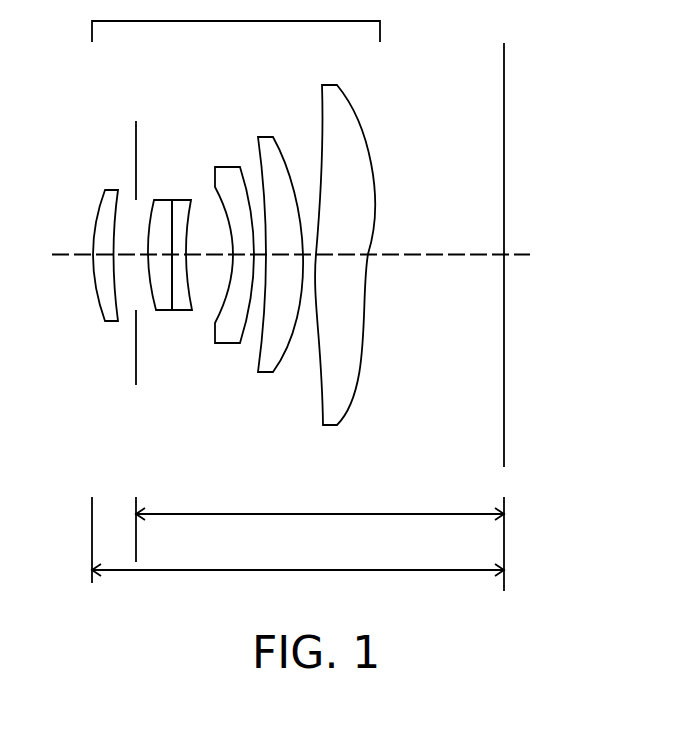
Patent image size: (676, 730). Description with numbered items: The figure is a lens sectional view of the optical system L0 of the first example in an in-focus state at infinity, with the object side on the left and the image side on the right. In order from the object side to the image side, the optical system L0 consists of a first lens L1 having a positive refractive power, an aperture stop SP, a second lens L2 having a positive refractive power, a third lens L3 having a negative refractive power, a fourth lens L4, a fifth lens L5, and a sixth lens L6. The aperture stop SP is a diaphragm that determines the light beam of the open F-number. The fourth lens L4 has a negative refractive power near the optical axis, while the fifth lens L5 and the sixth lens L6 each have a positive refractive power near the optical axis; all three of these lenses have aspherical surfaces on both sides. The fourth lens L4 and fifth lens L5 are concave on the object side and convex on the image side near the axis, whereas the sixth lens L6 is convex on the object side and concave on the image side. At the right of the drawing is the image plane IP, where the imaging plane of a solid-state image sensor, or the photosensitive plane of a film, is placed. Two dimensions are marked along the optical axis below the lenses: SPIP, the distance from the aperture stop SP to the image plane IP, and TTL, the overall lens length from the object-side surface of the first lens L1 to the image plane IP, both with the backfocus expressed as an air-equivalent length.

The optical system L0 is at (236, 21).
The first lens L1 is at (112, 310).
The second lens L2 is at (162, 300).
The third lens L3 is at (181, 300).
The fourth lens L4 is at (230, 337).
The fifth lens L5 is at (265, 367).
The sixth lens L6 is at (340, 403).
The aperture stop SP is at (137, 153).
The image plane IP is at (504, 196).
The distance from aperture stop to image plane SPIP is at (320, 526).
The overall lens length TTL is at (298, 582).